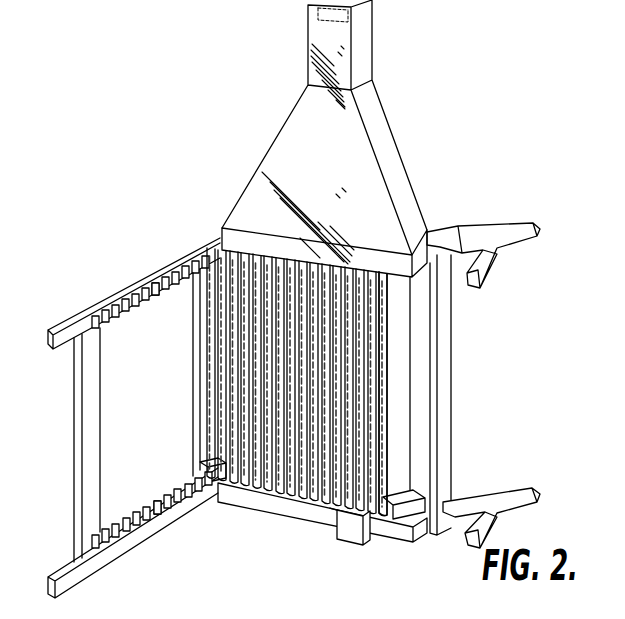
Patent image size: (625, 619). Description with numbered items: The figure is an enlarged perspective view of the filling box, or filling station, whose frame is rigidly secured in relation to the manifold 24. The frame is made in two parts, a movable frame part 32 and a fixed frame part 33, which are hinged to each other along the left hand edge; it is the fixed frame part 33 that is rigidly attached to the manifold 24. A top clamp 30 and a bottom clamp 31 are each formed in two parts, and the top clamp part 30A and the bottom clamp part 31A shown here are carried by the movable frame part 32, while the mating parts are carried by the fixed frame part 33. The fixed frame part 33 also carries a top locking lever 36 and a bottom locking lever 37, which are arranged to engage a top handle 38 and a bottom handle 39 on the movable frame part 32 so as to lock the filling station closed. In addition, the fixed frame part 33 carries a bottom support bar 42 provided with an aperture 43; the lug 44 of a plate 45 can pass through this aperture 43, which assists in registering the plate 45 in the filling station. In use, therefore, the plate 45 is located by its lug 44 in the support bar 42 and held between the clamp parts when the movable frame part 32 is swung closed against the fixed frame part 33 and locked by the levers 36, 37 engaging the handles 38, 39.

The manifold 24 is at (397, 164).
The top clamp 30 is at (133, 284).
The top clamp part 30A is at (153, 296).
The bottom clamp 31 is at (133, 504).
The bottom clamp part 31A is at (152, 512).
The movable frame part 32 is at (80, 442).
The fixed frame part 33 is at (430, 463).
The top locking lever 36 is at (507, 232).
The bottom locking lever 37 is at (507, 500).
The top handle 38 is at (63, 327).
The bottom handle 39 is at (70, 572).
The bottom support bar 42 is at (390, 532).
The aperture 43 is at (337, 518).
The lug 44 is at (348, 540).
The plate 45 is at (392, 398).